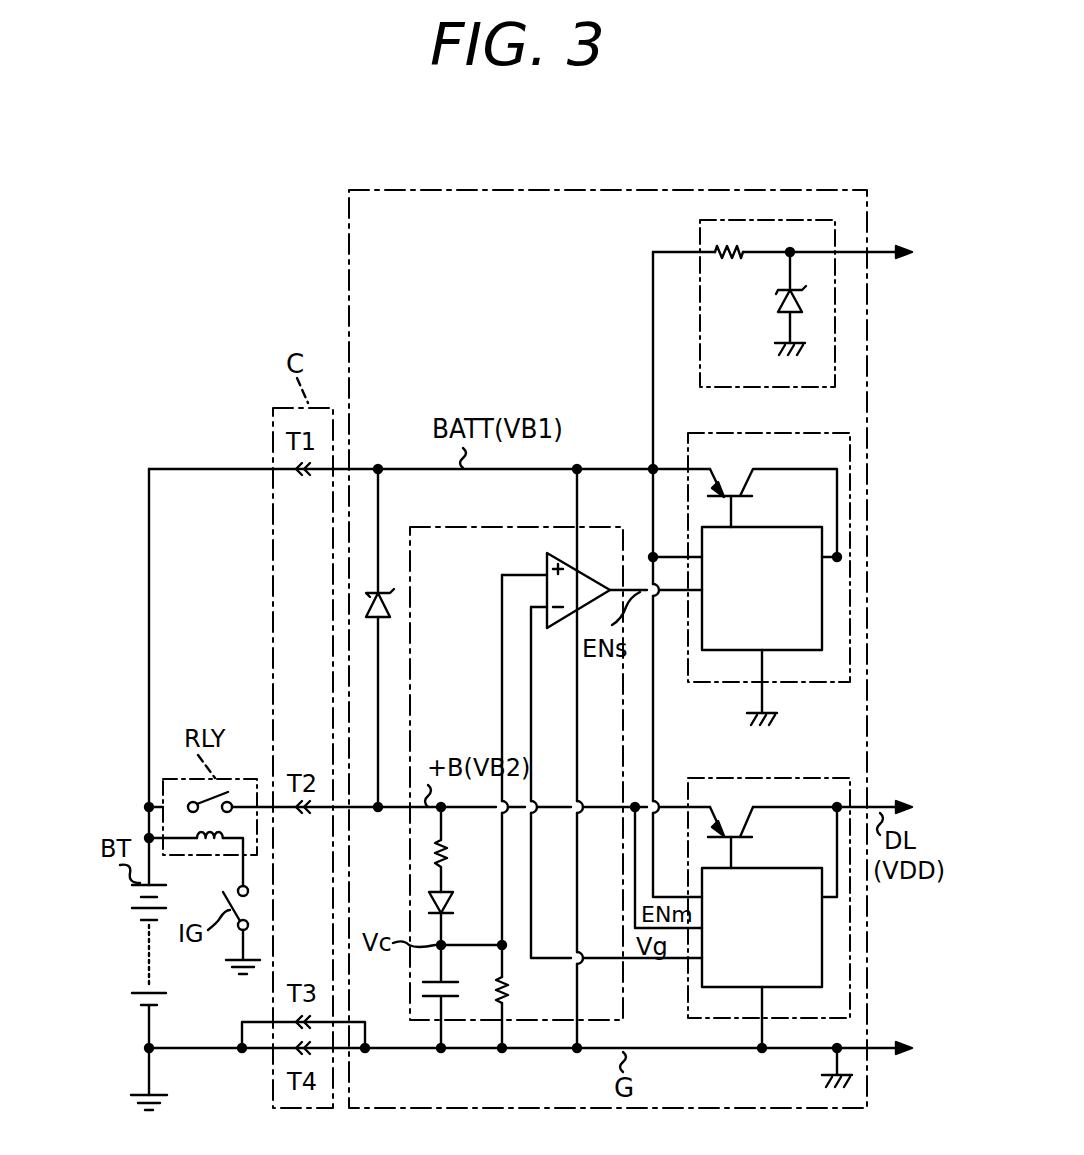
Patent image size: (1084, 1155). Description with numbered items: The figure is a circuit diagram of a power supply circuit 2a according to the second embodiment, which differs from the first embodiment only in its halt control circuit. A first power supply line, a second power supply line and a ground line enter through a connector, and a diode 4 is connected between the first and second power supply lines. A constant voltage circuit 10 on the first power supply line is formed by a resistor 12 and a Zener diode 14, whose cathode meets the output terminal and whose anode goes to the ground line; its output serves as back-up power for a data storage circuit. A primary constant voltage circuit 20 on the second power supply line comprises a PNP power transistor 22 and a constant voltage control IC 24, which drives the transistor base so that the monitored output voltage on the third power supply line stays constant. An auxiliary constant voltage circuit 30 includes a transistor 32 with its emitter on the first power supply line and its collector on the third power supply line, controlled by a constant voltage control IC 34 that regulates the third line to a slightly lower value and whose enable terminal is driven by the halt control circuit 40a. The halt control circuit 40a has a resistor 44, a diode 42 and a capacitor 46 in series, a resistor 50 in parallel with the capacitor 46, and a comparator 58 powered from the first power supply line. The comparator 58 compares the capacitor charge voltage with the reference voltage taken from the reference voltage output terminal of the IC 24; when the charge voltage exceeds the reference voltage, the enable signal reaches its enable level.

The power supply circuit 2a is at (808, 188).
The diode 4 is at (375, 620).
The constant voltage circuit 10 is at (762, 388).
The resistor 12 is at (728, 258).
The Zener diode 14 is at (778, 303).
The constant voltage circuit 20 is at (742, 778).
The PNP type power transistor 22 is at (745, 828).
The constant voltage control IC 24 is at (765, 868).
The auxiliary constant voltage circuit 30 is at (746, 682).
The transistor 32 is at (740, 484).
The constant voltage control IC 34 is at (767, 527).
The halt control circuit 40a is at (455, 527).
The diode 42 is at (452, 922).
The resistor 44 is at (448, 850).
The capacitor 46 is at (448, 982).
The resistor 50 is at (508, 988).
The comparator 58 is at (544, 565).